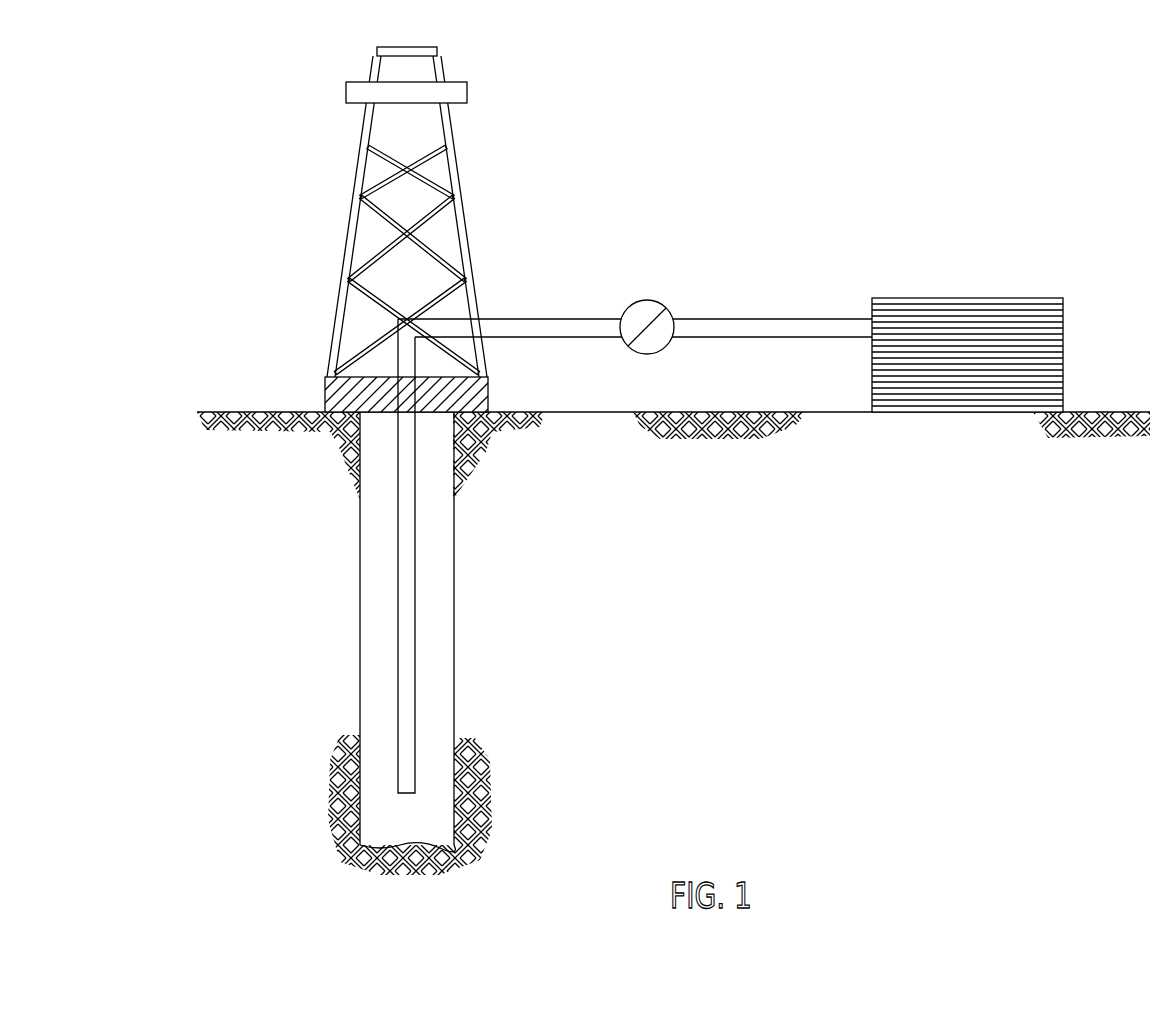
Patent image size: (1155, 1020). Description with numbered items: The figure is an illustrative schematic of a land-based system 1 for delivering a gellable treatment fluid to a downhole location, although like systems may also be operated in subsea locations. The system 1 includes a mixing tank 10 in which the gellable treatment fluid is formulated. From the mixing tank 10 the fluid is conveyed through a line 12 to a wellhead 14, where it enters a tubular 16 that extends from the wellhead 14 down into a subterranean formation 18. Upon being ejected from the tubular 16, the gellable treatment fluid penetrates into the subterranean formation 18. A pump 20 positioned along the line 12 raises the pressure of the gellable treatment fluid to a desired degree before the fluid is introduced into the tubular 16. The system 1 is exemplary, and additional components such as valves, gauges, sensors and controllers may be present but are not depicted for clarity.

The system 1 is at (190, 52).
The mixing tank 10 is at (1037, 303).
The line 12 is at (551, 318).
The wellhead 14 is at (325, 395).
The tubular 16 is at (416, 543).
The subterranean formation 18 is at (272, 634).
The pump 20 is at (663, 304).